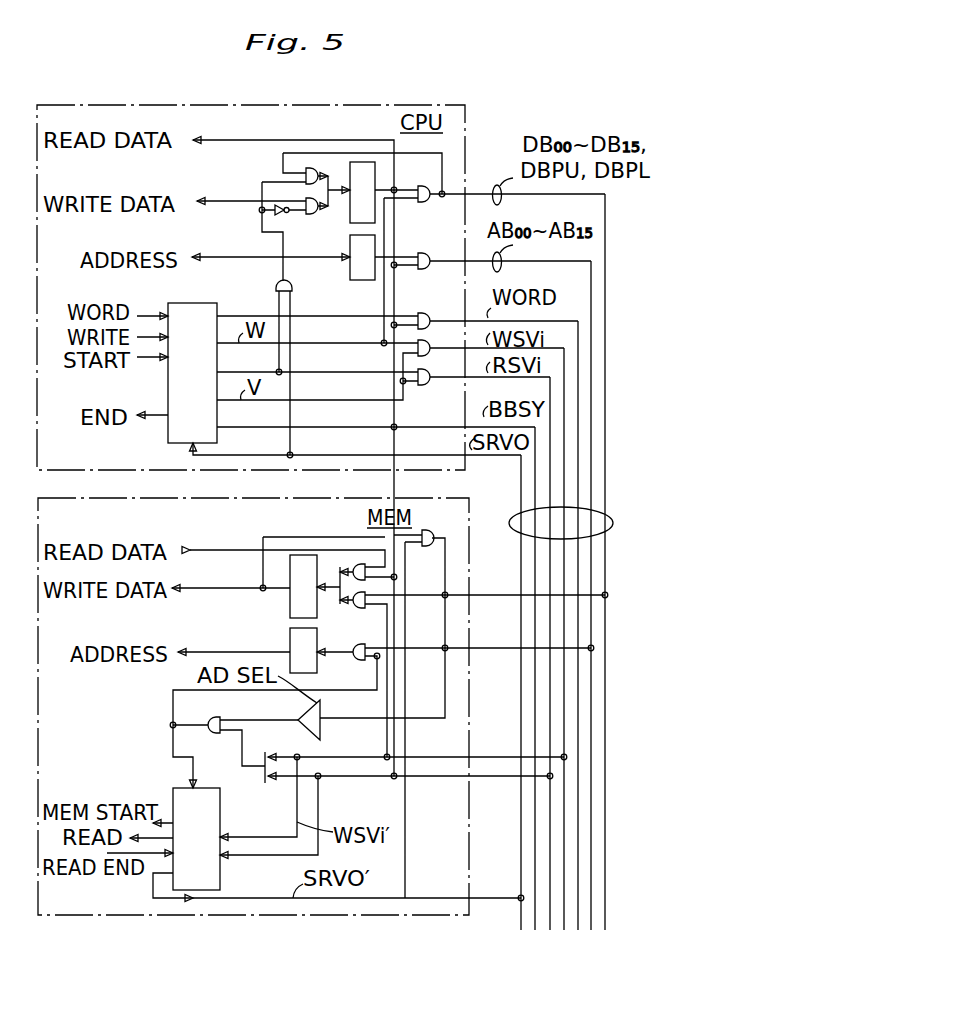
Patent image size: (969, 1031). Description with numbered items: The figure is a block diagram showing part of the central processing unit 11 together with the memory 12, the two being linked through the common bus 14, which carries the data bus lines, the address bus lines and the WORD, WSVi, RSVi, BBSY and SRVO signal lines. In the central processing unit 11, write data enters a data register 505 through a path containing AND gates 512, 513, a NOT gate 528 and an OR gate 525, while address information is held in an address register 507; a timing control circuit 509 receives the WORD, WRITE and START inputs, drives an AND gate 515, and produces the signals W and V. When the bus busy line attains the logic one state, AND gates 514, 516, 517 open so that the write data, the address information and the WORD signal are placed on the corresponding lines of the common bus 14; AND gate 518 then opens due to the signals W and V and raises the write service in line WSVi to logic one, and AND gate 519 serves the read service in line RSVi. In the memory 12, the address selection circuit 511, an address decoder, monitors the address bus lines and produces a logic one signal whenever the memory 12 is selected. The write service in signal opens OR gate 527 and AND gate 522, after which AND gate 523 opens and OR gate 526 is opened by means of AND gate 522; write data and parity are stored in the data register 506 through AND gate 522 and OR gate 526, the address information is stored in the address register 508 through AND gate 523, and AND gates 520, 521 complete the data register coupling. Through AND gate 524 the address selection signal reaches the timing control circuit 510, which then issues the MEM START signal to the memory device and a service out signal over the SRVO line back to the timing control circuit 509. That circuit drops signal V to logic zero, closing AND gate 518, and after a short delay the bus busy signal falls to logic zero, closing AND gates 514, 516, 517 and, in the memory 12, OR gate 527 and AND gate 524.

The central processing unit 11 is at (425, 104).
The memory 12 is at (420, 499).
The common bus 14 is at (613, 523).
The data register 505 is at (366, 162).
The data register 506 is at (310, 555).
The address register 507 is at (361, 280).
The address register 508 is at (290, 642).
The timing control circuit 509 is at (204, 303).
The timing control circuit 510 is at (220, 817).
The address selection circuit 511 is at (316, 703).
The AND gate 512 is at (311, 168).
The AND gate 513 is at (312, 222).
The AND gate 514 is at (425, 186).
The AND gate 515 is at (289, 282).
The AND gate 516 is at (426, 253).
The AND gate 517 is at (426, 313).
The AND gate 518 is at (436, 341).
The AND gate 519 is at (436, 369).
The AND gate 520 is at (446, 527).
The AND gate 521 is at (358, 564).
The AND gate 522 is at (366, 597).
The AND gate 523 is at (360, 660).
The AND gate 524 is at (214, 718).
The OR gate 525 is at (330, 197).
The OR gate 526 is at (340, 604).
The OR gate 527 is at (265, 775).
The NOT gate 528 is at (262, 232).